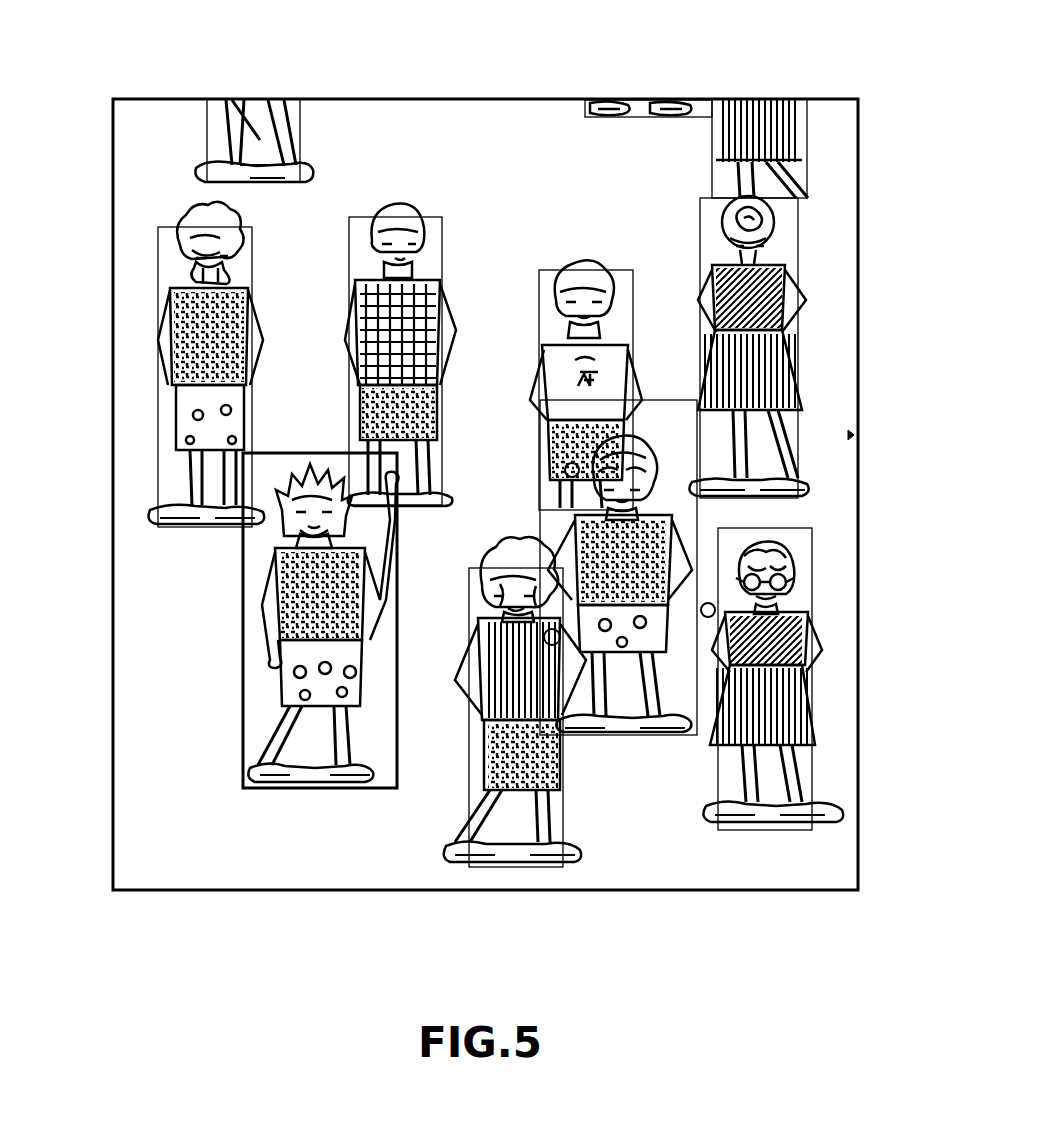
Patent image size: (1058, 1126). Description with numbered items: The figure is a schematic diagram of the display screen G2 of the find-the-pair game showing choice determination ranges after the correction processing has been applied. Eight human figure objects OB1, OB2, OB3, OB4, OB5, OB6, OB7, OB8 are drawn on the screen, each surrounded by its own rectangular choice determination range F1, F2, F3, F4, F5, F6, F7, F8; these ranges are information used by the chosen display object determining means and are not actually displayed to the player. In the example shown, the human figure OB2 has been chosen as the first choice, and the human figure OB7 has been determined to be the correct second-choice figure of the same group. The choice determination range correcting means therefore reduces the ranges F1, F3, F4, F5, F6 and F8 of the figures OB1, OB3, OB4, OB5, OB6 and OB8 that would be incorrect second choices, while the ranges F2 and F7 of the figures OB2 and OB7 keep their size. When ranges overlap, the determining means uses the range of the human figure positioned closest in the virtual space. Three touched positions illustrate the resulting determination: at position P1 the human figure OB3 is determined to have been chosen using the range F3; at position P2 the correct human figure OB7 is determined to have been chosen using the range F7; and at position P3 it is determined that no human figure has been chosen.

The display screen G2 is at (232, 90).
The human figure object OB1 is at (163, 283).
The choice determination range F1 is at (160, 332).
The human figure object OB2 is at (270, 565).
The choice determination range F2 is at (243, 617).
The human figure object OB3 is at (460, 690).
The choice determination range F3 is at (503, 868).
The human figure object OB4 is at (372, 275).
The choice determination range F4 is at (441, 217).
The human figure object OB5 is at (540, 300).
The choice determination range F5 is at (622, 270).
The human figure object OB6 is at (700, 305).
The choice determination range F6 is at (700, 340).
The human figure object OB7 is at (700, 480).
The choice determination range F7 is at (698, 517).
The human figure object OB8 is at (812, 612).
The choice determination range F8 is at (815, 650).
The position P1 is at (558, 645).
The position P2 is at (577, 477).
The position P3 is at (714, 614).